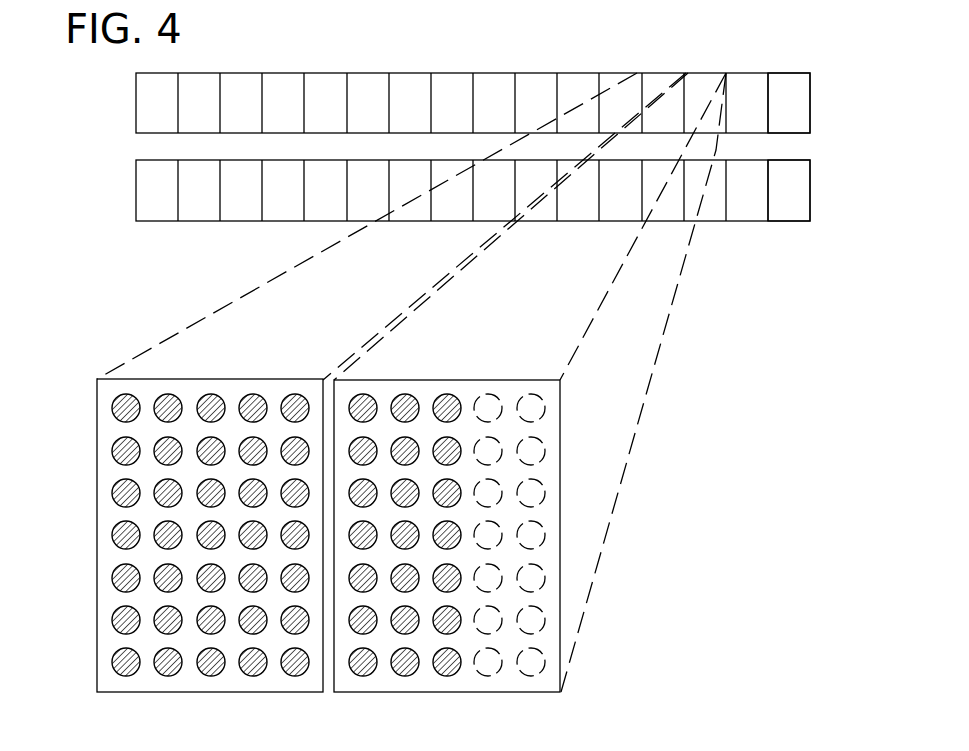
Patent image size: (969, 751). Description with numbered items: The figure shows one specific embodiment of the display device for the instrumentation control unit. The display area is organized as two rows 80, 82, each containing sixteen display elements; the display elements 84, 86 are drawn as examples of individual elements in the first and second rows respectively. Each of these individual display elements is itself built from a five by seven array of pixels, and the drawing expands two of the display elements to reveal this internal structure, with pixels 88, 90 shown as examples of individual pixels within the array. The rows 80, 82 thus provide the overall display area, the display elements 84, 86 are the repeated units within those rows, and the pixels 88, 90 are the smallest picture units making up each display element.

The row of display elements 80 is at (106, 99).
The row of display elements 82 is at (106, 185).
The display element 84 is at (810, 113).
The display element 86 is at (810, 201).
The pixel 88 is at (112, 402).
The pixel 90 is at (486, 394).